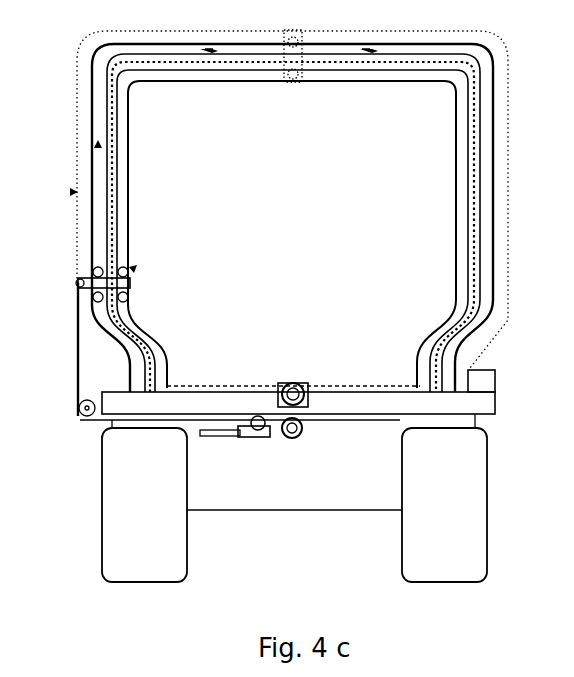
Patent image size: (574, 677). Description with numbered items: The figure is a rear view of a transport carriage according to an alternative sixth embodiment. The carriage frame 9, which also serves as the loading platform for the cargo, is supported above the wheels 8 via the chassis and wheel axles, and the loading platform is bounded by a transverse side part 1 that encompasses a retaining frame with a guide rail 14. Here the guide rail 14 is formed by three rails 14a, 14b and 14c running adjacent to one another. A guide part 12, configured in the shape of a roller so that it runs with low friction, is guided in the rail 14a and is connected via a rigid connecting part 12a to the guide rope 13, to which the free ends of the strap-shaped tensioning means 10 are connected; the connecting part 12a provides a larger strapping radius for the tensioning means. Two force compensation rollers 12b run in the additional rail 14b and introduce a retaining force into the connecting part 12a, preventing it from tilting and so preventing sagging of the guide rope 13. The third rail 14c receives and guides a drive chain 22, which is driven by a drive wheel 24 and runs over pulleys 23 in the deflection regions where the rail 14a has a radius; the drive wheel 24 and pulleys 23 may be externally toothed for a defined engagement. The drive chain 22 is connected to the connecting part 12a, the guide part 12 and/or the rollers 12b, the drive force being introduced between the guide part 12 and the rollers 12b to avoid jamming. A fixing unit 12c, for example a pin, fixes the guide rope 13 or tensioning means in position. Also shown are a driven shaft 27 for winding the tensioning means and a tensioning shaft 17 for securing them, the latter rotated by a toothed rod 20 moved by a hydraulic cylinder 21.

The transverse side part 1 is at (293, 292).
The wheel 8 is at (143, 582).
The carriage frame 9 is at (376, 417).
The strap-shaped tensioning means 10 is at (77, 366).
The guide part 12 is at (137, 265).
The connecting part 12a is at (86, 279).
The force compensation roller 12b is at (130, 283).
The fixing unit 12c is at (490, 380).
The guide rope 13 is at (80, 283).
The guide rail 14 is at (78, 192).
The first guide rail 14a is at (92, 118).
The additional guide rail 14b is at (120, 153).
The third guide rail 14c is at (117, 113).
The tensioning shaft 17 is at (263, 430).
The toothed rod 20 is at (251, 437).
The hydraulic cylinder 21 is at (214, 437).
The drive chain 22 is at (128, 192).
The pulley 23 is at (118, 68).
The drive wheel 24 is at (293, 383).
The driven shaft 27 is at (302, 436).